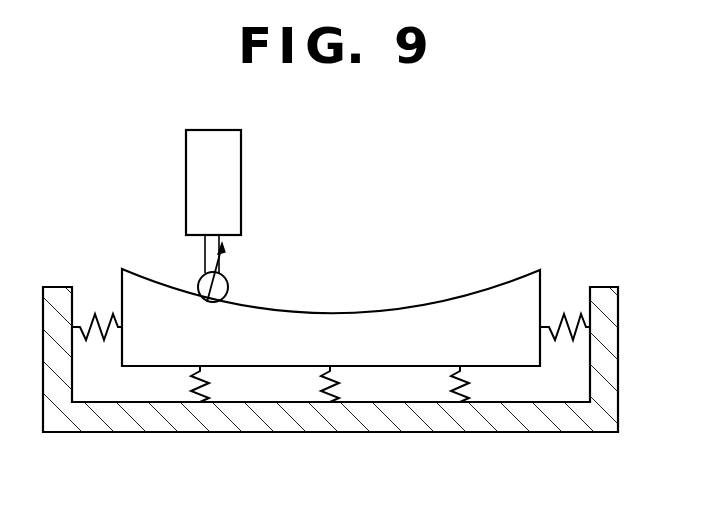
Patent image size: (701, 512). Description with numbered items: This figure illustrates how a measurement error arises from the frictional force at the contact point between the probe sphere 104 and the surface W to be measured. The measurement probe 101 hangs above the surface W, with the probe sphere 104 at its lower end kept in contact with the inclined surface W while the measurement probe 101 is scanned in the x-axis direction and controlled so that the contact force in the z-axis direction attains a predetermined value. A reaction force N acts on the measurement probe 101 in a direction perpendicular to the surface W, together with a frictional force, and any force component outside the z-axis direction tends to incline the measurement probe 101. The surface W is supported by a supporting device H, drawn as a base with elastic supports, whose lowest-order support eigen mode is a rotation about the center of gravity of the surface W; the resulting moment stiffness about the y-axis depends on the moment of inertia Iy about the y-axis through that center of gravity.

The measurement probe 101 is at (241, 168).
The probe sphere 104 is at (251, 272).
The reaction force N is at (202, 272).
The surface to be measured W is at (500, 292).
The supporting device H is at (140, 423).
The moment of inertia about the y-axis ly is at (331, 358).